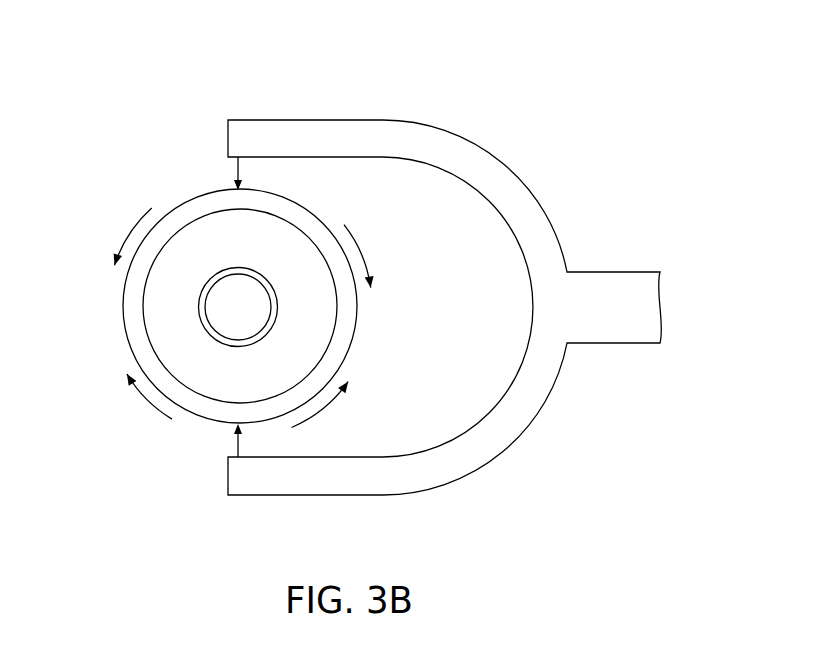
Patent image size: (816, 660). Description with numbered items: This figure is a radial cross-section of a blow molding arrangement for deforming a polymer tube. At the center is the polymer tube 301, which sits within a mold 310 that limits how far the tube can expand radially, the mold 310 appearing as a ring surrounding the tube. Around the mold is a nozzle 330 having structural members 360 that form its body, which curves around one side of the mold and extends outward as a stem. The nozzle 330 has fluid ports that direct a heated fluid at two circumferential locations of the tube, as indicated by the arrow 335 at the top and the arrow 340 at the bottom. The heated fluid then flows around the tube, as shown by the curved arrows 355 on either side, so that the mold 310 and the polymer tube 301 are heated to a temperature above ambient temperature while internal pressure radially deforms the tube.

The polymer tube 301 is at (200, 323).
The mold 310 is at (172, 212).
The nozzle 330 is at (335, 119).
The arrow 335 is at (236, 164).
The arrow 340 is at (237, 447).
The arrows 355 is at (123, 245).
The structural members 360 is at (488, 168).